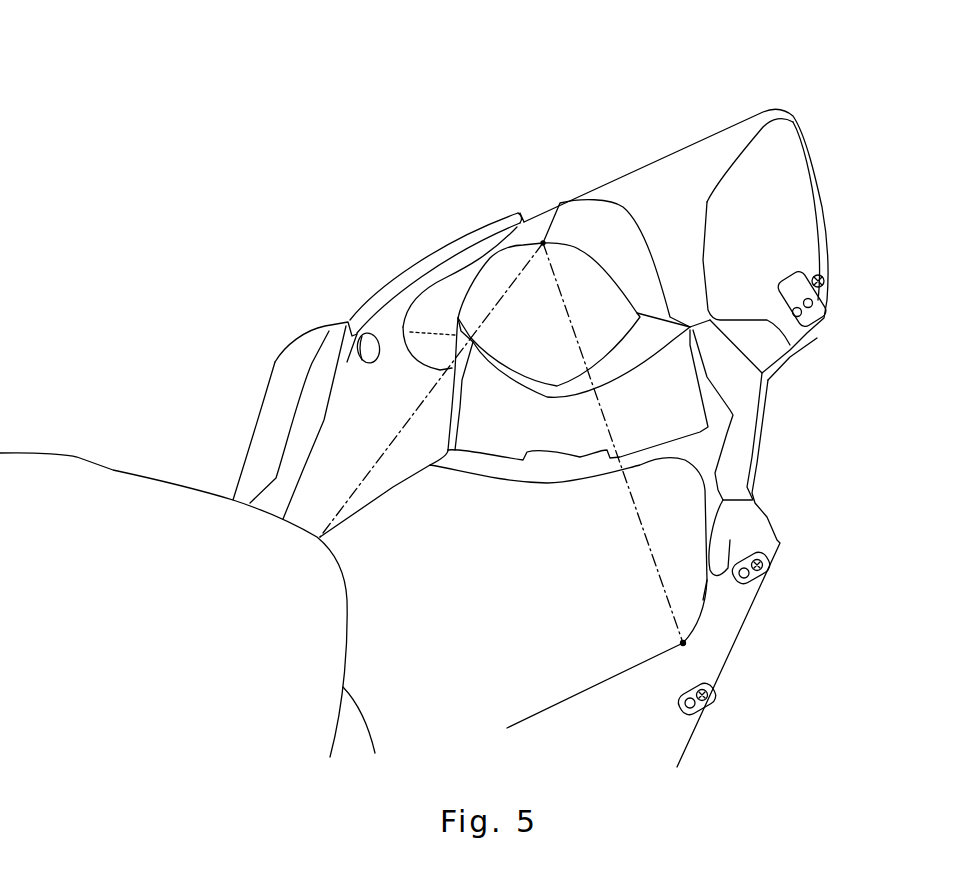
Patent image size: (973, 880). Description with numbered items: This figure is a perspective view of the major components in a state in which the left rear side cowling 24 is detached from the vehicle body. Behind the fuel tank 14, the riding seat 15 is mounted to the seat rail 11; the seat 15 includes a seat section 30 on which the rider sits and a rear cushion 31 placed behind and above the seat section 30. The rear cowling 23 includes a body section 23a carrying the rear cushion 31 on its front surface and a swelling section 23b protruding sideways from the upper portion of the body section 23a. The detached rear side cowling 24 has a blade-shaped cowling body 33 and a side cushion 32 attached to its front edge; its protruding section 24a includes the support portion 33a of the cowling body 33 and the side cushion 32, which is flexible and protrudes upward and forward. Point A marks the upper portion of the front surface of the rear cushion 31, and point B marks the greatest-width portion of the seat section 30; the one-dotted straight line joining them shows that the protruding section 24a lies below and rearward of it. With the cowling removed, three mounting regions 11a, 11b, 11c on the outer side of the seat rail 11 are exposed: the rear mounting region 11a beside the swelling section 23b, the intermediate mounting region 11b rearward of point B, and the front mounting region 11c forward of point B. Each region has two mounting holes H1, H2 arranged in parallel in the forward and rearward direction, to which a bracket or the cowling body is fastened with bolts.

The fuel tank 14 is at (113, 467).
The riding seat 15 is at (563, 697).
The seat rail 11 is at (730, 630).
The mounting region 11a is at (822, 305).
The mounting region 11b is at (765, 580).
The mounting region 11c is at (705, 713).
The rear cowling 23 is at (679, 148).
The body section 23a is at (732, 140).
The swelling section 23b is at (760, 253).
The rear side cowling 24 is at (416, 266).
The protruding section 24a is at (270, 243).
The seat section 30 is at (605, 663).
The rear cushion 31 is at (543, 243).
The side cushion 32 is at (277, 373).
The cowling body 33 is at (367, 300).
The support portion 33a is at (343, 320).
The point A is at (523, 215).
The point B is at (683, 643).
The mounting hole H1 is at (792, 318).
The mounting hole H2 is at (818, 290).